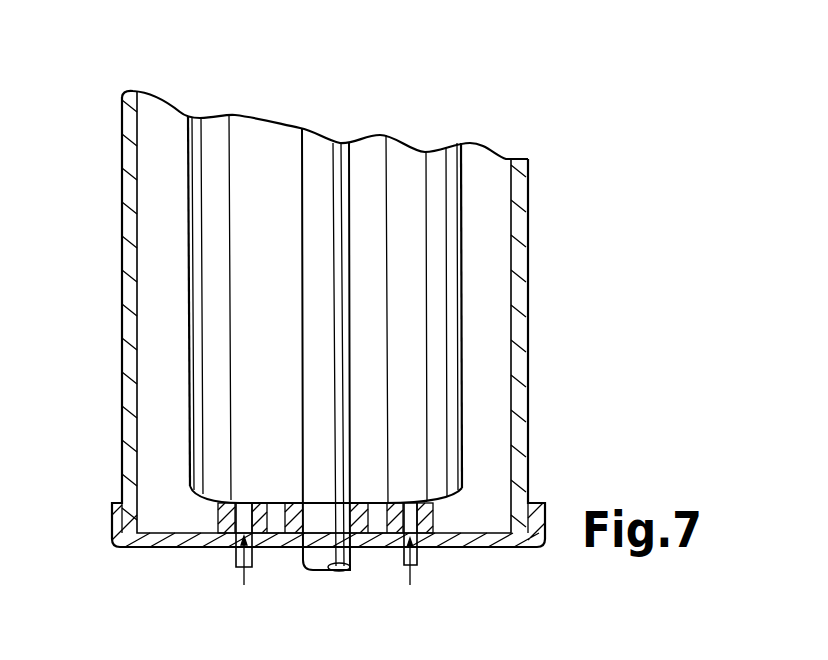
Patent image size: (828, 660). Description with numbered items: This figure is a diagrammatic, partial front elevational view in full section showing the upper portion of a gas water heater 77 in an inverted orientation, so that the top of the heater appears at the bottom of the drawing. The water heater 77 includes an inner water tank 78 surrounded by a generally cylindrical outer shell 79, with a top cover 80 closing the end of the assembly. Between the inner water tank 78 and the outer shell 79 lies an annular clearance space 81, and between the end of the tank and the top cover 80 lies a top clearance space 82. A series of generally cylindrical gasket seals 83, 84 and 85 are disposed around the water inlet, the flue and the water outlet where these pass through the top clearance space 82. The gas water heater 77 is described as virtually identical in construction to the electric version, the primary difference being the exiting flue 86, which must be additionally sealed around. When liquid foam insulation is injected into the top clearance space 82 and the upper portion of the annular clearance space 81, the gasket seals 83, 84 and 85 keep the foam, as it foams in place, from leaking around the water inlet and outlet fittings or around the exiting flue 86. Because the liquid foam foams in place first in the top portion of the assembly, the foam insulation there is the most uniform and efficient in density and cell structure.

The gas water heater 77 is at (593, 264).
The inner water tank 78 is at (433, 162).
The outer shell 79 is at (522, 428).
The top cover 80 is at (517, 540).
The annular clearance space 81 is at (500, 349).
The top clearance space 82 is at (198, 522).
The gasket seal 83 is at (229, 535).
The gasket seal 84 is at (297, 535).
The gasket seal 85 is at (435, 525).
The exiting flue 86 is at (327, 566).